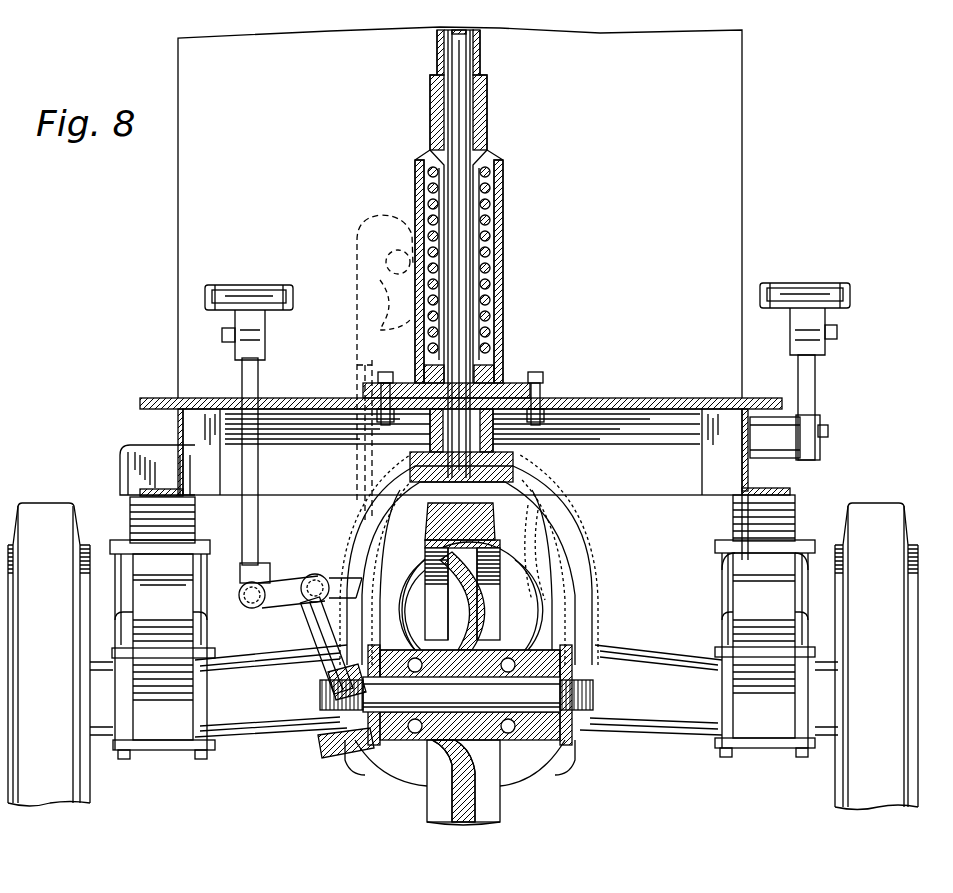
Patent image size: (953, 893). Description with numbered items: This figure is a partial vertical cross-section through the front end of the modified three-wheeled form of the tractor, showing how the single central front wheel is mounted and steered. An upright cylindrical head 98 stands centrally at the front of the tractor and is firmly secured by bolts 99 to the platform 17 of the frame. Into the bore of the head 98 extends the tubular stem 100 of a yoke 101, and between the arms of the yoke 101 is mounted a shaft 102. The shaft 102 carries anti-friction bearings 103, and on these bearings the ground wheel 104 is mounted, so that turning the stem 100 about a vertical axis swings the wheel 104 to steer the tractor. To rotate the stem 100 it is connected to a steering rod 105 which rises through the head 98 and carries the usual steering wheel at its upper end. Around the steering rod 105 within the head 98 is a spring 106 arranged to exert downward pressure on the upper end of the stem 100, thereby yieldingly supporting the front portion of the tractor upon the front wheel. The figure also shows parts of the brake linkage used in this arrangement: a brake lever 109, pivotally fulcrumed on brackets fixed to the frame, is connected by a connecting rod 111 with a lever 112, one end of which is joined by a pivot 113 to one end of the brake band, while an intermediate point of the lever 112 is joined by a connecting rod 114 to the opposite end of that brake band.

The platform 17 is at (602, 398).
The upright cylindrical head 98 is at (505, 262).
The bolts 99 is at (389, 375).
The tubular stem 100 is at (506, 378).
The yoke 101 is at (556, 470).
The shaft 102 is at (594, 691).
The anti-friction bearings 103 is at (496, 679).
The ground wheel 104 is at (500, 815).
The steering rod 105 is at (458, 208).
The spring 106 is at (498, 228).
The brake lever 109 is at (255, 391).
The connecting rod 111 is at (245, 572).
The lever 112 is at (272, 613).
The pivot 113 is at (345, 563).
The connecting rod 114 is at (316, 631).